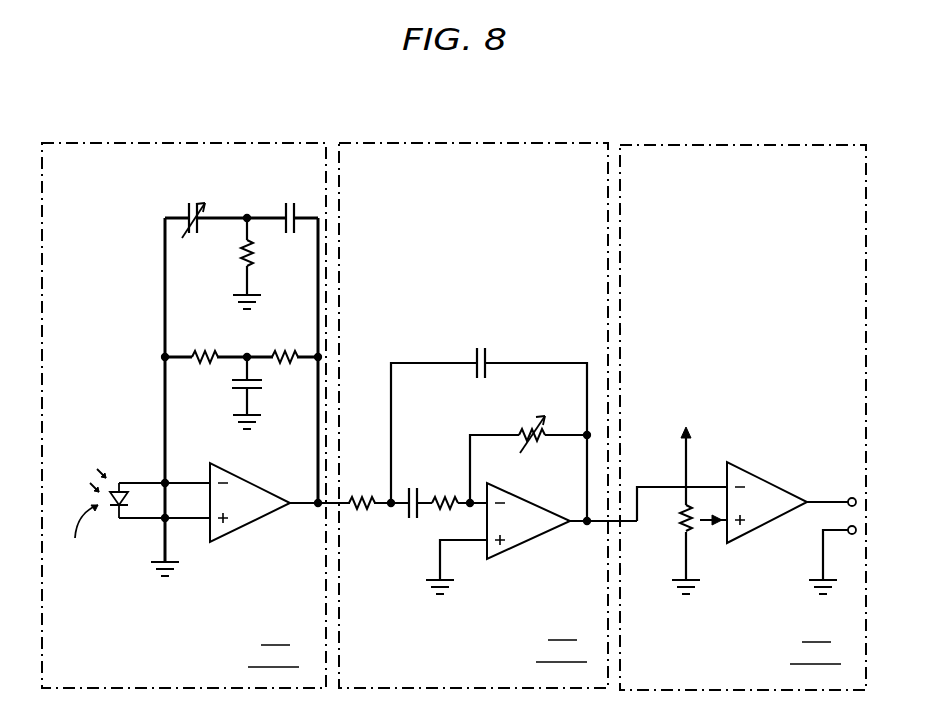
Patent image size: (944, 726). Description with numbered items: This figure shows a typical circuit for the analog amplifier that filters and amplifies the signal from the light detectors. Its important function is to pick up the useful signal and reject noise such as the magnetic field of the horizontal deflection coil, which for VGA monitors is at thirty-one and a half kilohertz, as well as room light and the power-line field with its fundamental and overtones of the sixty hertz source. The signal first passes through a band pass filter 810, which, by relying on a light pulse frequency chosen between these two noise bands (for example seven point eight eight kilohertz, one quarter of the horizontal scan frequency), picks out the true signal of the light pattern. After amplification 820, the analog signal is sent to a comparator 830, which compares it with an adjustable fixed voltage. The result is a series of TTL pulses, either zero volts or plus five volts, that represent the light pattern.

The band pass filter 810 is at (212, 143).
The amplification 820 is at (497, 143).
The comparator 830 is at (747, 145).